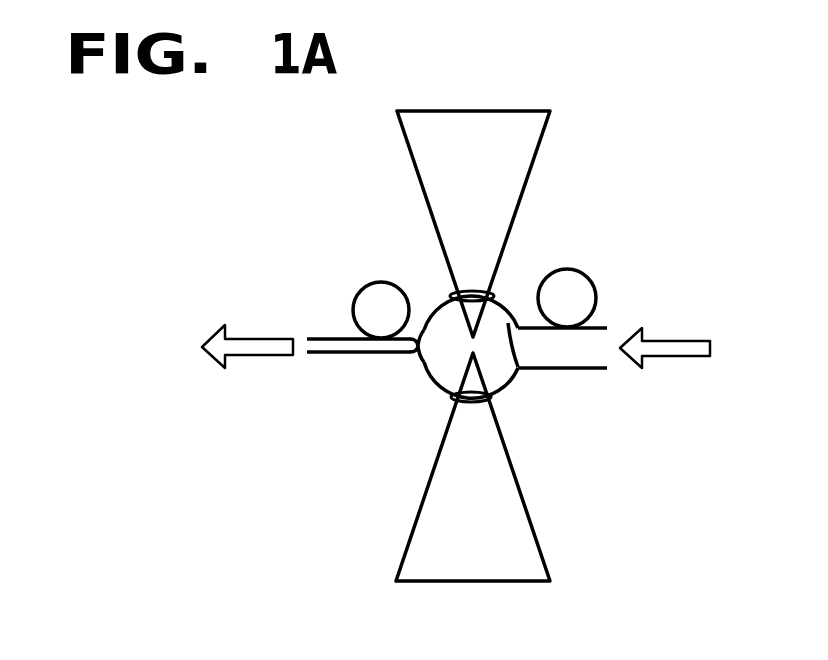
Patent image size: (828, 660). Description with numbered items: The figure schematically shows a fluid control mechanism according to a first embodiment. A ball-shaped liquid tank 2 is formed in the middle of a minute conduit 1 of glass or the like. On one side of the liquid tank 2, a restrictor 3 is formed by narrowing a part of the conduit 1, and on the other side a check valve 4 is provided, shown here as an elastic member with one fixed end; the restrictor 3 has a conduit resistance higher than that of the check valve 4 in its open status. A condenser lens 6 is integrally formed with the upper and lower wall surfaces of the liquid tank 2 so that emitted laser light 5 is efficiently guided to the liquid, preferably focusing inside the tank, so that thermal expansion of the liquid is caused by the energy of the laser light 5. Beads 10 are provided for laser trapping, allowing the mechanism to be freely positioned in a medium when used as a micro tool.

The minute conduit 1 is at (325, 357).
The liquid tank 2 is at (430, 395).
The restrictor 3 is at (413, 355).
The check valve 4 is at (518, 355).
The laser light 5 is at (475, 118).
The condenser lens 6 is at (458, 292).
The bead 10 is at (578, 287).